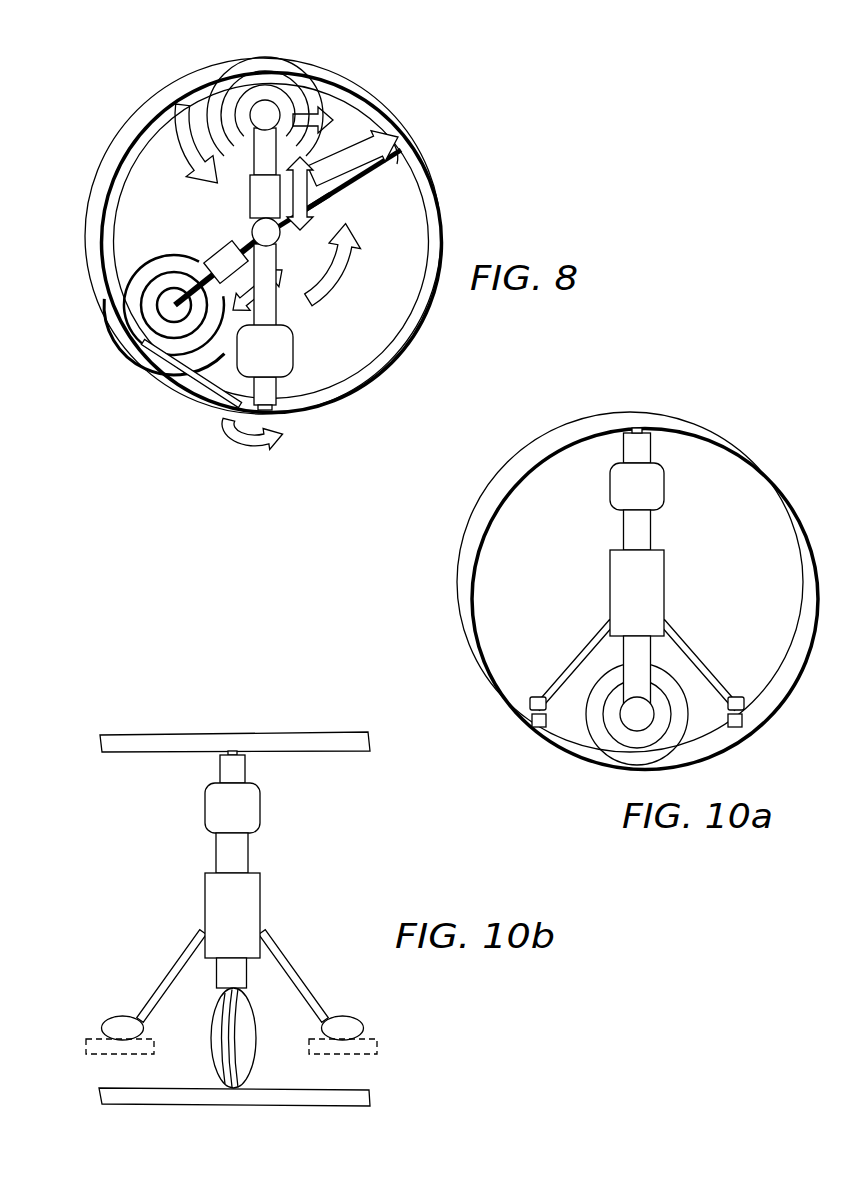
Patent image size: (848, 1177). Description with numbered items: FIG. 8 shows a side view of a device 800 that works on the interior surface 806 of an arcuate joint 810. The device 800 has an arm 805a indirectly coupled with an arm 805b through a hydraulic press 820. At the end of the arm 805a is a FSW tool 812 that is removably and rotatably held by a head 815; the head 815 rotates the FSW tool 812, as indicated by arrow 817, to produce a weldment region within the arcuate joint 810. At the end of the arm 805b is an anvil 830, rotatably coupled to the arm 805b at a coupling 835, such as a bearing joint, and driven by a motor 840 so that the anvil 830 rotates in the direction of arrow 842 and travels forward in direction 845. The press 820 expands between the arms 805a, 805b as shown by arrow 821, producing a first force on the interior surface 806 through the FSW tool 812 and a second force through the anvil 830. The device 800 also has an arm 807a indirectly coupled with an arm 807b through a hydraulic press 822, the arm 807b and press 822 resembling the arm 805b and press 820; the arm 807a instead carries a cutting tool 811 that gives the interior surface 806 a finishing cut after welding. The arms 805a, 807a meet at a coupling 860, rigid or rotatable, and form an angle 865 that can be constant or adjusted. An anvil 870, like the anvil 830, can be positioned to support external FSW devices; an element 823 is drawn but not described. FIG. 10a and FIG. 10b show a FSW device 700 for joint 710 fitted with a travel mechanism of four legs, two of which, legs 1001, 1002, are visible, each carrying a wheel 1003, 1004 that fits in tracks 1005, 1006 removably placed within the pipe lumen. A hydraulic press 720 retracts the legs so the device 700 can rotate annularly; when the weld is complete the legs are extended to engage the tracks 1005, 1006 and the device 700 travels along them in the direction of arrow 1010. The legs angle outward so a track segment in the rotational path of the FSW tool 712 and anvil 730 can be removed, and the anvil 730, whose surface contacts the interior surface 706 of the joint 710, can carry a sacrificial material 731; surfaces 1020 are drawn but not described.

In FIG. 8, the device 800 is at (403, 186).
In FIG. 8, the arm 805a is at (272, 310).
In FIG. 8, the arm 805b is at (273, 162).
In FIG. 8, the interior surface 806 is at (114, 199).
In FIG. 8, the arm 807a is at (383, 152).
In FIG. 8, the arm 807b is at (196, 274).
In FIG. 8, the arcuate joint 810 is at (115, 120).
In FIG. 8, the cutting tool 811 is at (395, 152).
In FIG. 8, the FSW tool 812 is at (274, 393).
In FIG. 8, the head 815 is at (292, 350).
In FIG. 8, the arrow 817 is at (226, 428).
In FIG. 8, the hydraulic press 820 is at (252, 190).
In FIG. 8, the arrow 821 is at (312, 206).
In FIG. 8, the hydraulic press 822 is at (213, 254).
In FIG. 8, the support strut 823 is at (245, 398).
In FIG. 8, the anvil 830 is at (253, 82).
In FIG. 8, the coupling 835 is at (255, 113).
In FIG. 8, the motor 840 is at (277, 100).
In FIG. 8, the arrow 842 is at (181, 143).
In FIG. 8, the direction 845 is at (293, 100).
In FIG. 8, the coupling 860 is at (253, 232).
In FIG. 8, the angle 865 is at (337, 265).
In FIG. 8, the anvil 870 is at (143, 342).
In FIG. 10a, the FSW device 700 is at (740, 505).
In FIG. 10b, the FSW device 700 is at (117, 831).
In FIG. 10a, the interior surface 706 is at (488, 516).
In FIG. 10a, the joint 710 is at (488, 476).
In FIG. 10b, the FSW tool 712 is at (258, 800).
In FIG. 10a, the hydraulic press 720 is at (614, 576).
In FIG. 10b, the anvil 730 is at (255, 998).
In FIG. 10b, the sacrificial material 731 is at (242, 1026).
In FIG. 10a, the leg 1001 is at (576, 650).
In FIG. 10b, the leg 1001 is at (172, 972).
In FIG. 10a, the leg 1002 is at (697, 650).
In FIG. 10a, the wheel 1003 is at (535, 700).
In FIG. 10b, the wheel 1003 is at (117, 1017).
In FIG. 10a, the wheel 1004 is at (742, 700).
In FIG. 10a, the track 1005 is at (538, 727).
In FIG. 10b, the track 1005 is at (99, 1053).
In FIG. 10a, the track 1006 is at (736, 727).
In FIG. 10b, the arrow 1010 is at (326, 836).
In FIG. 10b, the surface plate 1020 is at (160, 734).